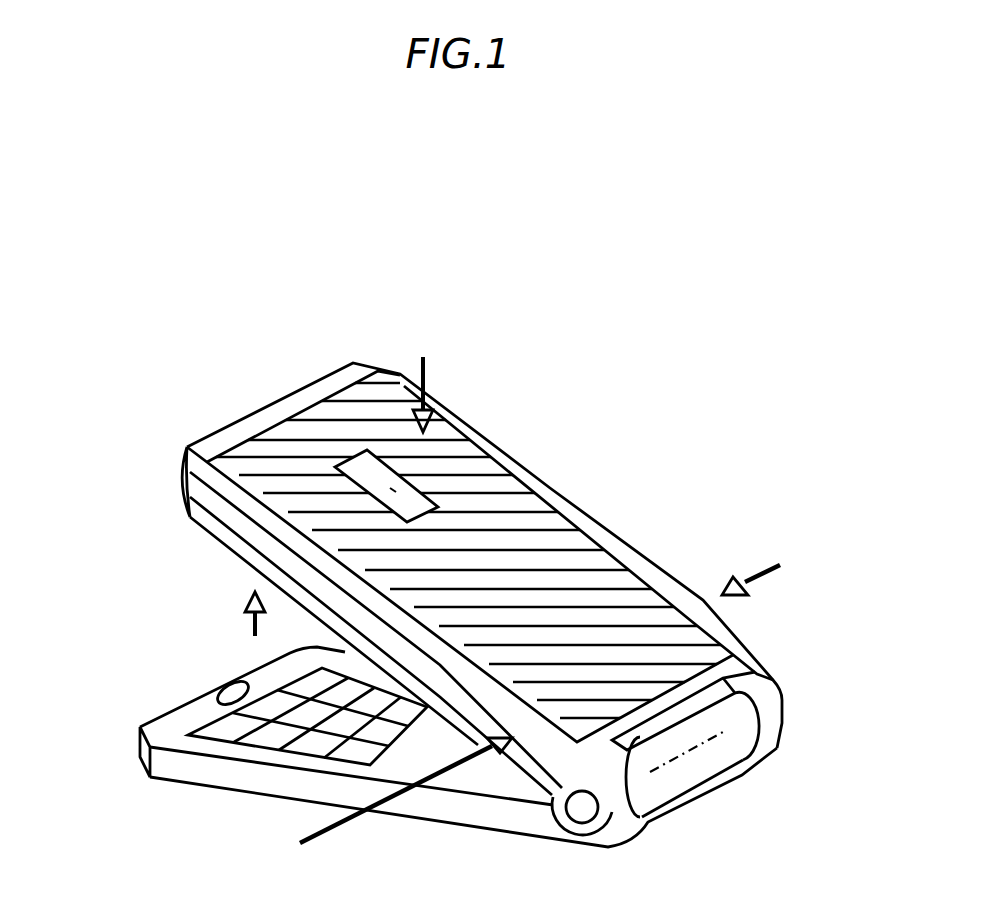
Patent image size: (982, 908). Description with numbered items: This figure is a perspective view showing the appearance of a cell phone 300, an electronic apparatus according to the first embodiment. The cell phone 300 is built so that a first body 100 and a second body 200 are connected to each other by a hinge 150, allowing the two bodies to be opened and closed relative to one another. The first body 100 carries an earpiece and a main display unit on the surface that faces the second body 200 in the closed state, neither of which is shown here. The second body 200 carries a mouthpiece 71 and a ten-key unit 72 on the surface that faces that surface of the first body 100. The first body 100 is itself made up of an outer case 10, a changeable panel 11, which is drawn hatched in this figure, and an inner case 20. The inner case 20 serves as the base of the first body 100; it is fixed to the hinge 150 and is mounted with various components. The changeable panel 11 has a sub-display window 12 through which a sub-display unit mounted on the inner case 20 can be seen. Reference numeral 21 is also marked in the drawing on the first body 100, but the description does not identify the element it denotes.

The cell phone 300 is at (653, 344).
The first body 100 is at (150, 468).
The outer case 10 is at (242, 428).
The changeable panel 11 is at (323, 428).
The sub-display window 12 is at (452, 450).
The opening 21 is at (393, 490).
The inner case 20 is at (233, 557).
The hinge 150 is at (695, 764).
The second body 200 is at (133, 762).
The mouthpiece 71 is at (216, 690).
The ten-key unit 72 is at (268, 742).